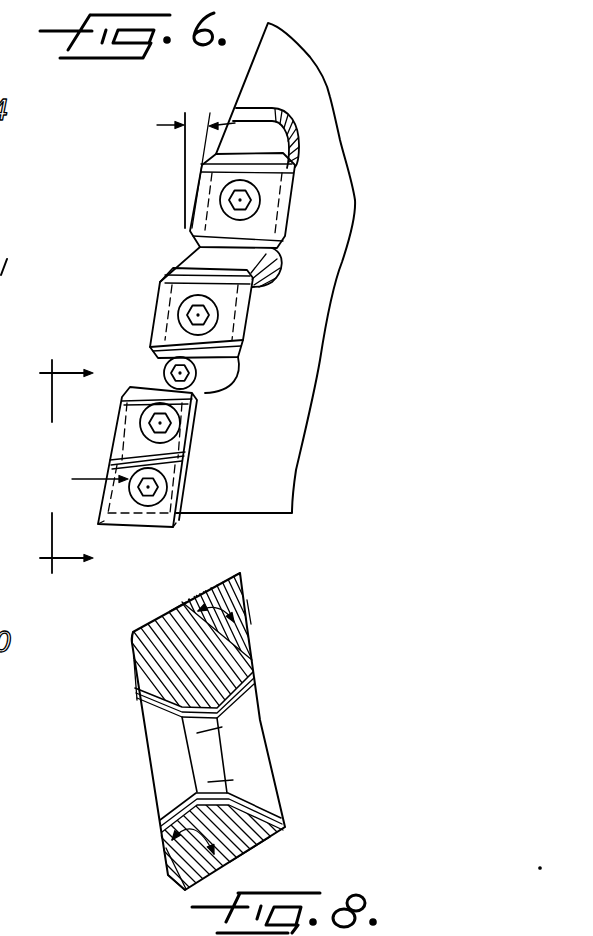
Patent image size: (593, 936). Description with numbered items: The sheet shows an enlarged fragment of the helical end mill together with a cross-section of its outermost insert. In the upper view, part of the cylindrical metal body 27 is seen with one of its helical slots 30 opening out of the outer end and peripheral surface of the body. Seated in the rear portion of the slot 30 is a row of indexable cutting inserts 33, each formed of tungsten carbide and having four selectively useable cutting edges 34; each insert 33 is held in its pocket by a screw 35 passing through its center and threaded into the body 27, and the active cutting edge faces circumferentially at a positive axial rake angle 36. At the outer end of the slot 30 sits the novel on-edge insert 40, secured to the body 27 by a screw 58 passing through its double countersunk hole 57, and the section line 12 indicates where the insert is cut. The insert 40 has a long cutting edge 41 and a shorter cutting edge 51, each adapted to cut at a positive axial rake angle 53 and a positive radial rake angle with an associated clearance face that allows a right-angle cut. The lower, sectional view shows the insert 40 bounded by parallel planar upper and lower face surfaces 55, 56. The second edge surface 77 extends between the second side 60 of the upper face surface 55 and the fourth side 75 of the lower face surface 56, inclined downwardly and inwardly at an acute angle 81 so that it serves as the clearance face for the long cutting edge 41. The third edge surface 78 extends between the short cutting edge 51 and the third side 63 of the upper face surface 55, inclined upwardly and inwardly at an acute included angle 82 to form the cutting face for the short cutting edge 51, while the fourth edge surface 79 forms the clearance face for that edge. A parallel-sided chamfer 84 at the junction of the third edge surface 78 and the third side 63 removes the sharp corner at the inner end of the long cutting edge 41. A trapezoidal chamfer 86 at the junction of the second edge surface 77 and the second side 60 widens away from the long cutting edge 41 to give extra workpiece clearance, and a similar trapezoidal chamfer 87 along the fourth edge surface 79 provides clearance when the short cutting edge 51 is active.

In FIG. 6, the section line 12- 12 is at (46, 466).
In FIG. 6, the cylindrical metal body 27 is at (325, 132).
In FIG. 6, the slot 30 is at (236, 366).
In FIG. 6, the indexable cutting insert 33 is at (297, 182).
In FIG. 6, the cutting edges 34 is at (240, 116).
In FIG. 6, the screw 35 is at (252, 199).
In FIG. 6, the positive axial rake angle 36 is at (198, 132).
In FIG. 6, the insert 40 is at (200, 465).
In FIG. 8, the insert 40 is at (265, 625).
In FIG. 6, the long cutting edge 41 is at (163, 378).
In FIG. 6, the short cutting edge 51 is at (118, 412).
In FIG. 8, the short cutting edge 51 is at (242, 572).
In FIG. 6, the positive axial rake angle 53 is at (98, 470).
In FIG. 8, the upper face surface 55 is at (133, 683).
In FIG. 8, the lower face surface 56 is at (251, 637).
In FIG. 8, the double countersunk hole 57 is at (233, 780).
In FIG. 6, the screw 58 is at (172, 420).
In FIG. 8, the second side of the upper face surface 60 is at (166, 855).
In FIG. 8, the third side of the upper face surface 63 is at (130, 641).
In FIG. 8, the fourth side of the lower face surface 75 is at (283, 827).
In FIG. 8, the second edge surface 77 is at (248, 851).
In FIG. 8, the third edge surface 78 is at (178, 607).
In FIG. 6, the fourth edge surface 79 is at (176, 525).
In FIG. 8, the acute angle 81 is at (177, 817).
In FIG. 8, the acute included angle 82 is at (217, 631).
In FIG. 8, the chamfer 84 is at (131, 635).
In FIG. 8, the trapezoidal chamfer 86 is at (168, 873).
In FIG. 6, the trapezoidal chamfer 87 is at (145, 525).